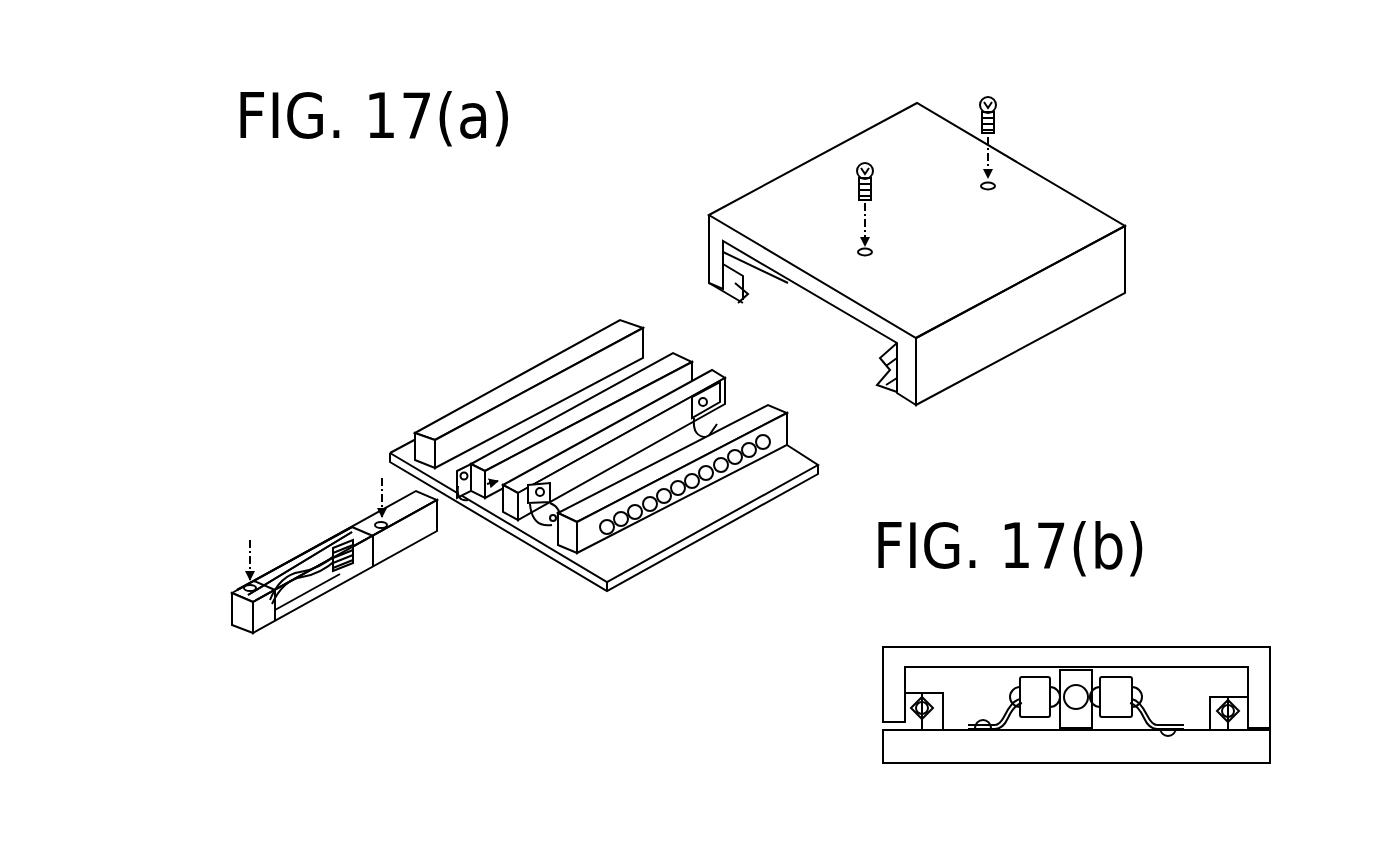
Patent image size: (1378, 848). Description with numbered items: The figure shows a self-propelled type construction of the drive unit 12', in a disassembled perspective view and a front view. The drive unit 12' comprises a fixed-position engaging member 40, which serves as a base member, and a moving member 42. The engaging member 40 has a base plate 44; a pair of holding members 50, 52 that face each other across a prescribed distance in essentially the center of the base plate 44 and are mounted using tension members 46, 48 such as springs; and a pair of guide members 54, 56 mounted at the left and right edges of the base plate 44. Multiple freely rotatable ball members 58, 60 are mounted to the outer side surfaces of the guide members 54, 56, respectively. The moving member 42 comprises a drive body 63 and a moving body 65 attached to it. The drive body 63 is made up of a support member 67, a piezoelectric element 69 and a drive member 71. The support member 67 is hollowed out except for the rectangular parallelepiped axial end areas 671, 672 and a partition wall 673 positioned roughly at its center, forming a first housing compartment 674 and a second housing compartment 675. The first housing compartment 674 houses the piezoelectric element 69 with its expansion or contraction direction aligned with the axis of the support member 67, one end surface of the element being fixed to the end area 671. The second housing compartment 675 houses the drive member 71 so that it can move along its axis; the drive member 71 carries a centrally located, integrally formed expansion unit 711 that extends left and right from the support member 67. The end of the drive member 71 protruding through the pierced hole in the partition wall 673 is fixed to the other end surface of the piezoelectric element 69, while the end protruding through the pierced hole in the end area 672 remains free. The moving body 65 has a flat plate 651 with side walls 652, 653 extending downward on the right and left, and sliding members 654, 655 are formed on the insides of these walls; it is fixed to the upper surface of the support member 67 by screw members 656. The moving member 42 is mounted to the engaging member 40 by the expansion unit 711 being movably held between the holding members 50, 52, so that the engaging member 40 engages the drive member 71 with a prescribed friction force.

In FIG. 17A, the drive unit 12' is at (687, 392).
In FIG. 17B, the drive unit 12' is at (1084, 669).
In FIG. 17A, the engaging member 40 is at (719, 541).
In FIG. 17B, the engaging member 40 is at (1274, 750).
In FIG. 17A, the moving member 42 is at (344, 593).
In FIG. 17B, the moving member 42 is at (1098, 723).
In FIG. 17A, the base plate 44 is at (623, 556).
In FIG. 17B, the base plate 44 is at (1243, 753).
In FIG. 17A, the tension member 46 is at (717, 407).
In FIG. 17B, the tension member 46 is at (1153, 713).
In FIG. 17A, the tension member 48 is at (462, 498).
In FIG. 17B, the tension member 48 is at (1000, 715).
In FIG. 17A, the holding member 50 is at (708, 373).
In FIG. 17B, the holding member 50 is at (1117, 682).
In FIG. 17A, the holding member 52 is at (680, 360).
In FIG. 17B, the holding member 52 is at (1030, 682).
In FIG. 17A, the guide member 54 is at (772, 410).
In FIG. 17B, the guide member 54 is at (1218, 725).
In FIG. 17A, the guide member 56 is at (490, 397).
In FIG. 17B, the guide member 56 is at (933, 722).
In FIG. 17A, the ball members 58 is at (727, 467).
In FIG. 17B, the ball members 58 is at (1223, 700).
In FIG. 17B, the ball members 60 is at (922, 700).
In FIG. 17A, the drive body 63 is at (406, 492).
In FIG. 17A, the moving body 65 is at (894, 265).
In FIG. 17B, the moving body 65 is at (1082, 661).
In FIG. 17A, the support member 67 is at (367, 530).
In FIG. 17B, the support member 67 is at (1082, 717).
In FIG. 17A, the piezoelectric element 69 is at (341, 544).
In FIG. 17A, the drive member 71 is at (285, 572).
In FIG. 17A, the flat plate 651 is at (1057, 195).
In FIG. 17A, the side wall 652 is at (1078, 307).
In FIG. 17A, the side wall 653 is at (712, 253).
In FIG. 17A, the sliding member 654 is at (890, 387).
In FIG. 17B, the sliding member 654 is at (1243, 707).
In FIG. 17A, the sliding member 655 is at (748, 291).
In FIG. 17B, the sliding member 655 is at (905, 700).
In FIG. 17A, the screw members 656 is at (983, 137).
In FIG. 17A, the axial end area 671 is at (403, 540).
In FIG. 17A, the axial end area 672 is at (257, 618).
In FIG. 17A, the partition wall 673 is at (320, 557).
In FIG. 17A, the first housing compartment 674 is at (355, 558).
In FIG. 17A, the second housing compartment 675 is at (280, 625).
In FIG. 17A, the expansion unit 711 is at (298, 583).
In FIG. 17B, the expansion unit 711 is at (1050, 703).